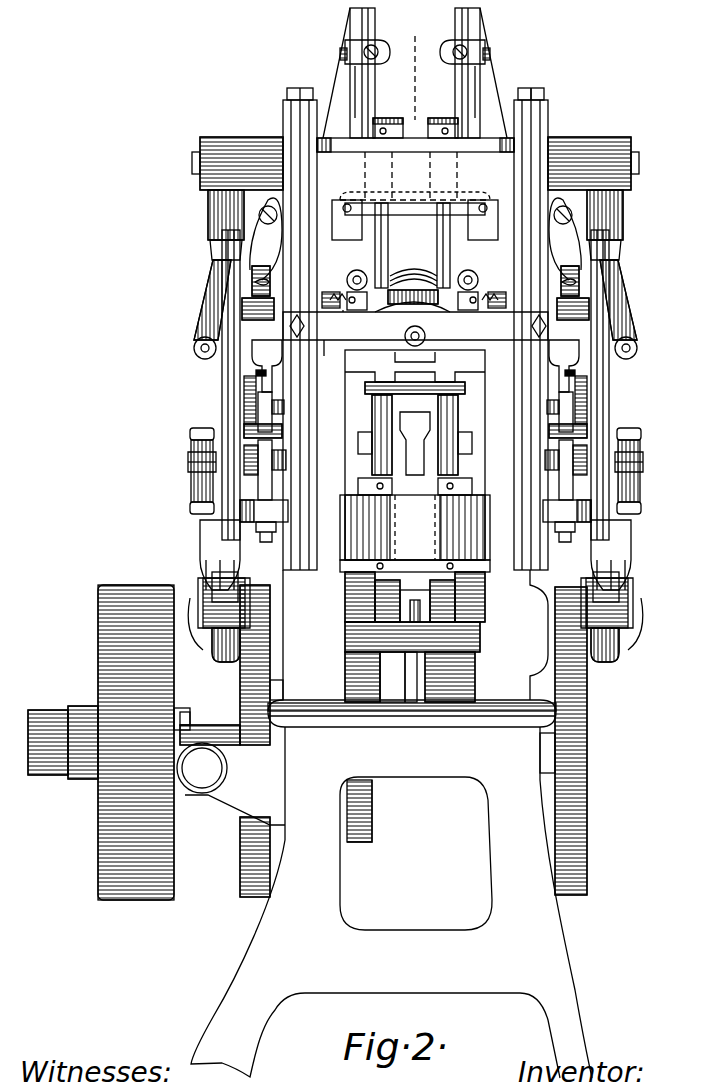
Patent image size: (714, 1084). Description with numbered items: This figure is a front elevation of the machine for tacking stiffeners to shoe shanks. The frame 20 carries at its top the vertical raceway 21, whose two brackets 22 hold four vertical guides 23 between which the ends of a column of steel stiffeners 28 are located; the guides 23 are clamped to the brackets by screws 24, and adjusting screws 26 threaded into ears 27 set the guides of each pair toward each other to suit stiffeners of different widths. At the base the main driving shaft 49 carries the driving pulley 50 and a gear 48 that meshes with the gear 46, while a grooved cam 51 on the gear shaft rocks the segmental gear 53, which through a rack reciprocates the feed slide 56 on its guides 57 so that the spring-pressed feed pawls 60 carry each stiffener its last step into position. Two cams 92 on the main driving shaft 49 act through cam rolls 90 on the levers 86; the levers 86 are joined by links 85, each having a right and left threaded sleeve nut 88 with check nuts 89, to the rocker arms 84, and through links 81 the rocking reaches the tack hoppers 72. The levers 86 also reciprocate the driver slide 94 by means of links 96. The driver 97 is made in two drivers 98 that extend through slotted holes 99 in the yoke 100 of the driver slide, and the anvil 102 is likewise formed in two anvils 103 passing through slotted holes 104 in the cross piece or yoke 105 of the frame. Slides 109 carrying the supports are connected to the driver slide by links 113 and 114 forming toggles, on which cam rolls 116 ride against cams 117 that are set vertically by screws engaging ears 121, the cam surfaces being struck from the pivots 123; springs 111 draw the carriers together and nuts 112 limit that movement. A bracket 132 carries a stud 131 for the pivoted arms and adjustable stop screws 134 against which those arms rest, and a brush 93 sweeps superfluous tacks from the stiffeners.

The frame 20 is at (391, 583).
The vertical raceway 21 is at (413, 67).
The brackets 22 is at (352, 20).
The vertical guides 23 is at (458, 76).
The screws 24 is at (342, 58).
The adjusting screws 26 is at (452, 52).
The ears 27 is at (355, 42).
The steel stiffeners 28 is at (412, 278).
The gear 46 is at (355, 610).
The gear 48 is at (372, 840).
The main driving shaft 49 is at (222, 730).
The driving pulley 50 is at (150, 590).
The cam 51 is at (445, 705).
The segmental gear 53 is at (412, 490).
The feed slide 56 is at (430, 360).
The guides 57 is at (365, 376).
The feed pawls 60 is at (412, 302).
The hoppers 72 is at (242, 136).
The links 81 is at (222, 325).
The rocker arms 84 is at (194, 352).
The links 85 is at (205, 533).
The levers 86 is at (222, 630).
The sleeve nut 88 is at (190, 462).
The check nuts 89 is at (192, 434).
The cam rolls 90 is at (226, 660).
The cams 92 is at (242, 868).
The brush 93 is at (440, 260).
The driver slide 94 is at (525, 86).
The links 96 is at (212, 480).
The driver 97 is at (445, 120).
The drivers 98 is at (385, 120).
The slotted holes 99 is at (366, 168).
The yoke 100 is at (415, 220).
The anvil 102 is at (445, 505).
The anvils 103 is at (378, 458).
The slotted holes 104 is at (355, 545).
The cross piece or yoke 105 is at (345, 574).
The slides 109 is at (256, 274).
The springs 111 is at (345, 312).
The nuts 112 is at (252, 284).
The link 113 is at (262, 352).
The link 114 is at (262, 416).
The cam roll 116 is at (256, 376).
The cam 117 is at (266, 482).
The ears 121 is at (266, 510).
The pivots 123 is at (240, 310).
The stud 131 is at (404, 338).
The bracket 132 is at (337, 358).
The stop screws 134 is at (343, 304).